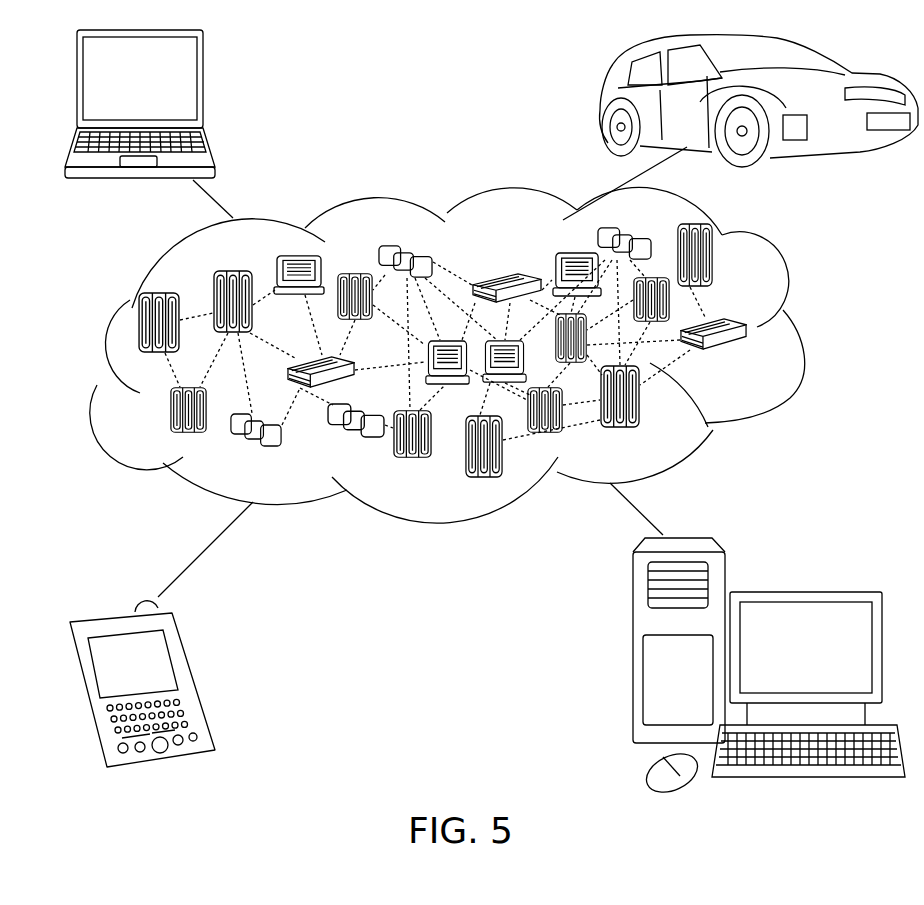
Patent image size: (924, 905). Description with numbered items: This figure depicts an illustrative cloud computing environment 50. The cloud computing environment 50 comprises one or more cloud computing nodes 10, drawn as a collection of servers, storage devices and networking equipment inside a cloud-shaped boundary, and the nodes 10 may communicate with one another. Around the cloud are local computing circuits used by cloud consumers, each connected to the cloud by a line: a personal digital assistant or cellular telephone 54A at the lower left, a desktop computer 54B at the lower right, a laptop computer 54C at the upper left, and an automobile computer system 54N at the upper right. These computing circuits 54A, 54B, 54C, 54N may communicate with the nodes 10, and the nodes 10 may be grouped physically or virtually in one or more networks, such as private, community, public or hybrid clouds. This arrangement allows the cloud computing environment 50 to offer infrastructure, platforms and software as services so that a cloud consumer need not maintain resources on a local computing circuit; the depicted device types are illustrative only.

The cloud computing node 10 is at (752, 359).
The cloud computing environment 50 is at (805, 333).
The personal digital assistant or cellular telephone 54A is at (193, 677).
The desktop computer 54B is at (802, 592).
The laptop computer 54C is at (203, 88).
The automobile computer system 54N is at (605, 104).